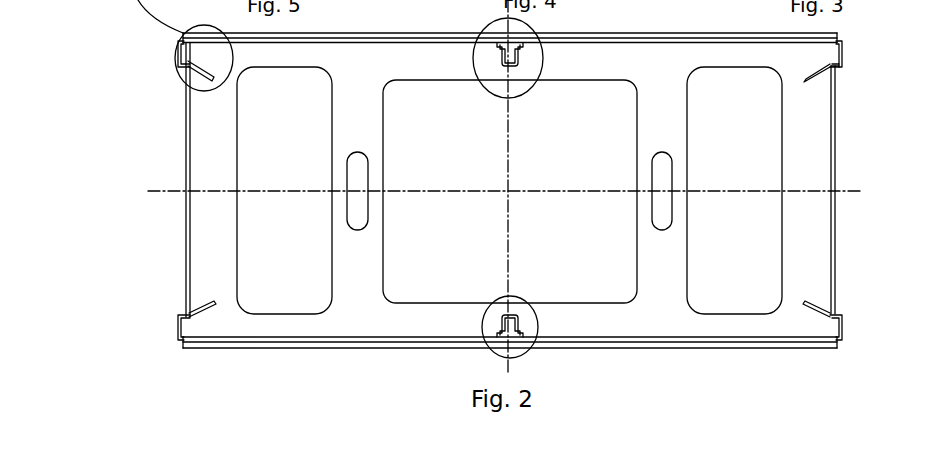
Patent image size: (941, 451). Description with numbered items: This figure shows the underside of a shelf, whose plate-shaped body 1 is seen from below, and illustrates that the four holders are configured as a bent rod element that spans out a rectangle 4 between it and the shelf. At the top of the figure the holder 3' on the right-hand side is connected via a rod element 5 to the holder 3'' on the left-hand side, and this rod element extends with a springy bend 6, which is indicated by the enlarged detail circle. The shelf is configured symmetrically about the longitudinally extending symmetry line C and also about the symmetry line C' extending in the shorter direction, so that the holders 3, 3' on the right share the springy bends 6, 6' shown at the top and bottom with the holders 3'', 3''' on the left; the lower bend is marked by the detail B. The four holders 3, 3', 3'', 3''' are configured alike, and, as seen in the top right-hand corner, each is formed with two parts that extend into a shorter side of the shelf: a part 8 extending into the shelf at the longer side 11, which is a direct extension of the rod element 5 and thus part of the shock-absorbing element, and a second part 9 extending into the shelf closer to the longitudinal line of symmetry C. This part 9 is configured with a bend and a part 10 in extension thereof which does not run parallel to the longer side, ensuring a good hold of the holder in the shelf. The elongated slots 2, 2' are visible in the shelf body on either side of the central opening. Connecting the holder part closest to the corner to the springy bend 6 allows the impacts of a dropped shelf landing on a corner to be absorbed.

The plate-shaped frame element 1 is at (848, 178).
The elongated slot 2 is at (689, 177).
The elongated slot 2' is at (384, 179).
The holder 3 is at (852, 320).
The holder 3' is at (866, 46).
The holder 3'' is at (162, 323).
The holder 3''' is at (163, 61).
The rectangle 4 is at (840, 67).
The rod element 5 is at (641, 42).
The bend 6 is at (486, 348).
The bend 6' is at (480, 33).
The part 8 is at (838, 40).
The second part 9 is at (840, 72).
The part 10 is at (820, 73).
The longer side 11 is at (320, 32).
The detail B is at (528, 356).
The symmetry line C is at (142, 165).
The symmetry line C' is at (543, 390).